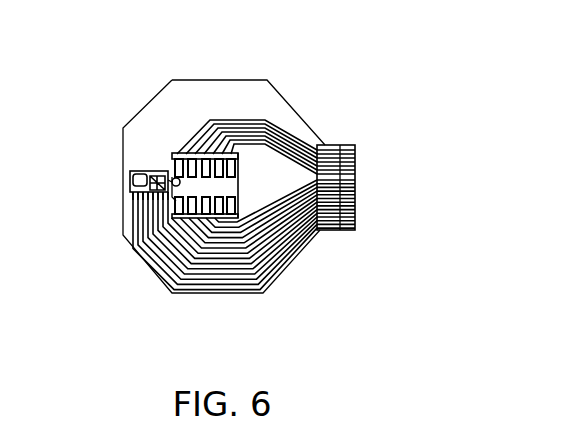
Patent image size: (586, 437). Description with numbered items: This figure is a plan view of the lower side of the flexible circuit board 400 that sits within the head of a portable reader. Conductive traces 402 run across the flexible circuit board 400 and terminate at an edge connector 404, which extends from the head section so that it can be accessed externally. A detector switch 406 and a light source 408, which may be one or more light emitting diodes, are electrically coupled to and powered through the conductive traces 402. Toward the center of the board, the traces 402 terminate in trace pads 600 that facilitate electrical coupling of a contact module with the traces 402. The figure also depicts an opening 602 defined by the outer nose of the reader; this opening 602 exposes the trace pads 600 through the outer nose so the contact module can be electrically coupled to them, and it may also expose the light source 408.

The flexible circuit board 400 is at (237, 87).
The conductive traces 402 is at (288, 140).
The edge connector 404 is at (345, 252).
The detector switch 406 is at (132, 173).
The light source 408 is at (138, 193).
The trace pads 600 is at (174, 180).
The opening 602 is at (278, 267).